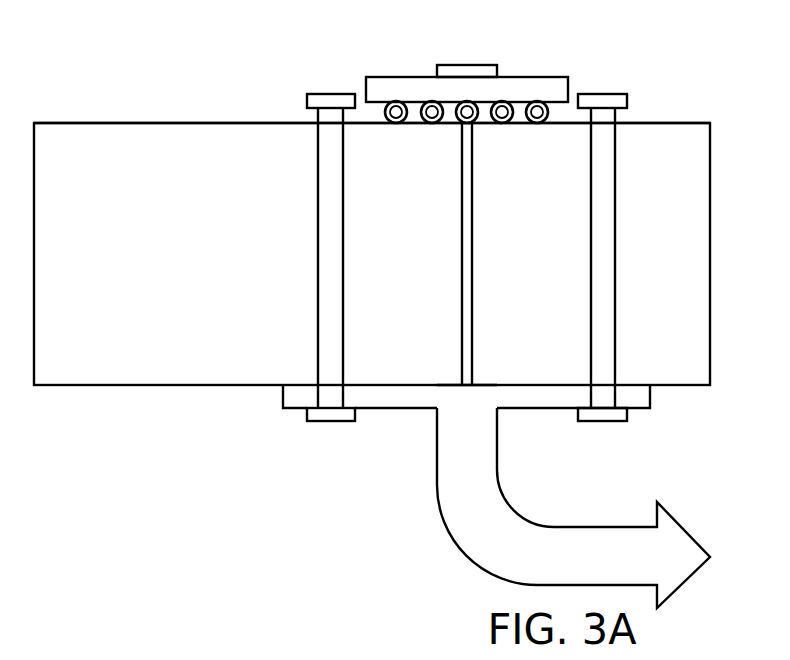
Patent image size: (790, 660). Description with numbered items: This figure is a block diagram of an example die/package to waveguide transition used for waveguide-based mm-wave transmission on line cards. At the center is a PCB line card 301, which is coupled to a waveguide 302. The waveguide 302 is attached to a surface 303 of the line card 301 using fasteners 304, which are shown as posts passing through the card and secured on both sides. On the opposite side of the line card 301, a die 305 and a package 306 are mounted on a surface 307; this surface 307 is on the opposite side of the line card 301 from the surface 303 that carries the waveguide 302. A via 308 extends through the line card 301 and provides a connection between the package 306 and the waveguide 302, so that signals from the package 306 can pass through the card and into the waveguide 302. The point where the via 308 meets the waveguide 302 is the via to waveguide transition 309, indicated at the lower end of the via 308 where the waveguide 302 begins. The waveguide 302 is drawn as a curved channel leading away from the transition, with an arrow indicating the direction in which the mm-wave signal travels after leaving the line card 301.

The PCB line card 301 is at (200, 291).
The waveguide 302 is at (531, 467).
The surface 303 is at (176, 385).
The fasteners 304 is at (318, 196).
The die 305 is at (465, 65).
The package 306 is at (532, 77).
The surface 307 is at (176, 123).
The via 308 is at (473, 255).
The via to waveguide transition 309 is at (444, 366).